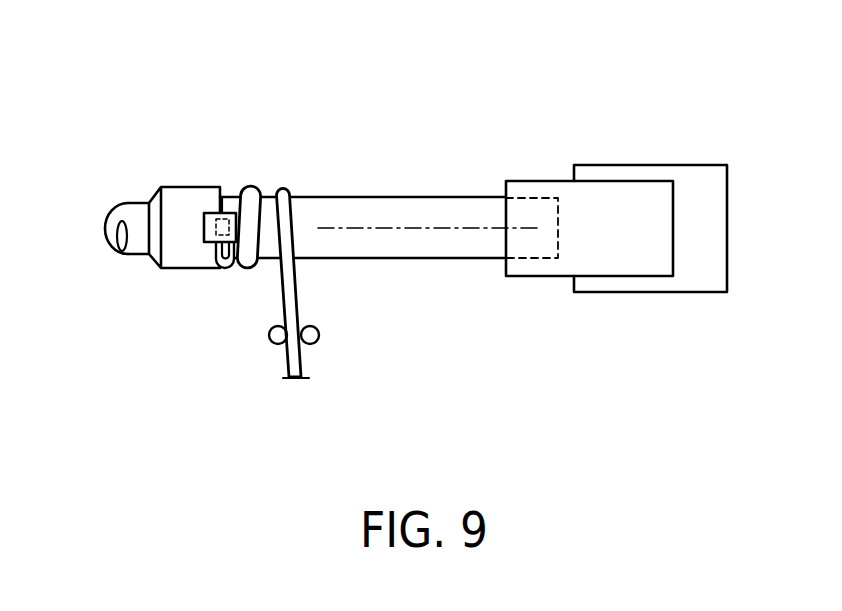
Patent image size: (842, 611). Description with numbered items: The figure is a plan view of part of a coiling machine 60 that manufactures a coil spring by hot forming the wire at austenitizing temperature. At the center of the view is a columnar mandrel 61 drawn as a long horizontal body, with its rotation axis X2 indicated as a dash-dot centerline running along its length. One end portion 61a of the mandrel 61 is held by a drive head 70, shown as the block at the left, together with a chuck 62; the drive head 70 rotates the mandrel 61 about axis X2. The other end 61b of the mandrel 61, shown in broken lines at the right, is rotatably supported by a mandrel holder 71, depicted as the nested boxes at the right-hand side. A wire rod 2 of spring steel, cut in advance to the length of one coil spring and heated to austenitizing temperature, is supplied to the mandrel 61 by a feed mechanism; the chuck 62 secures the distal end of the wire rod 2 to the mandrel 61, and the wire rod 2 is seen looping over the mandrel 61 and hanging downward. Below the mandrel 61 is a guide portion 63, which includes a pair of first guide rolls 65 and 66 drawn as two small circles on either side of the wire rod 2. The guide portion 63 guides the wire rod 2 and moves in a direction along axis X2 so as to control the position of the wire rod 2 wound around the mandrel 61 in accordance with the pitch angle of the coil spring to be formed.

The coiling machine 60 is at (497, 110).
The mandrel 61 is at (447, 205).
The end portion of the mandrel 61a is at (232, 205).
The other end of the mandrel 61b is at (533, 212).
The chuck 62 is at (210, 228).
The guide portion 63 is at (329, 366).
The first guide roll 65 is at (277, 342).
The first guide roll 66 is at (330, 333).
The drive head 70 is at (170, 187).
The mandrel holder 71 is at (635, 212).
The wire rod 2 is at (292, 227).
The axis X2 is at (372, 227).